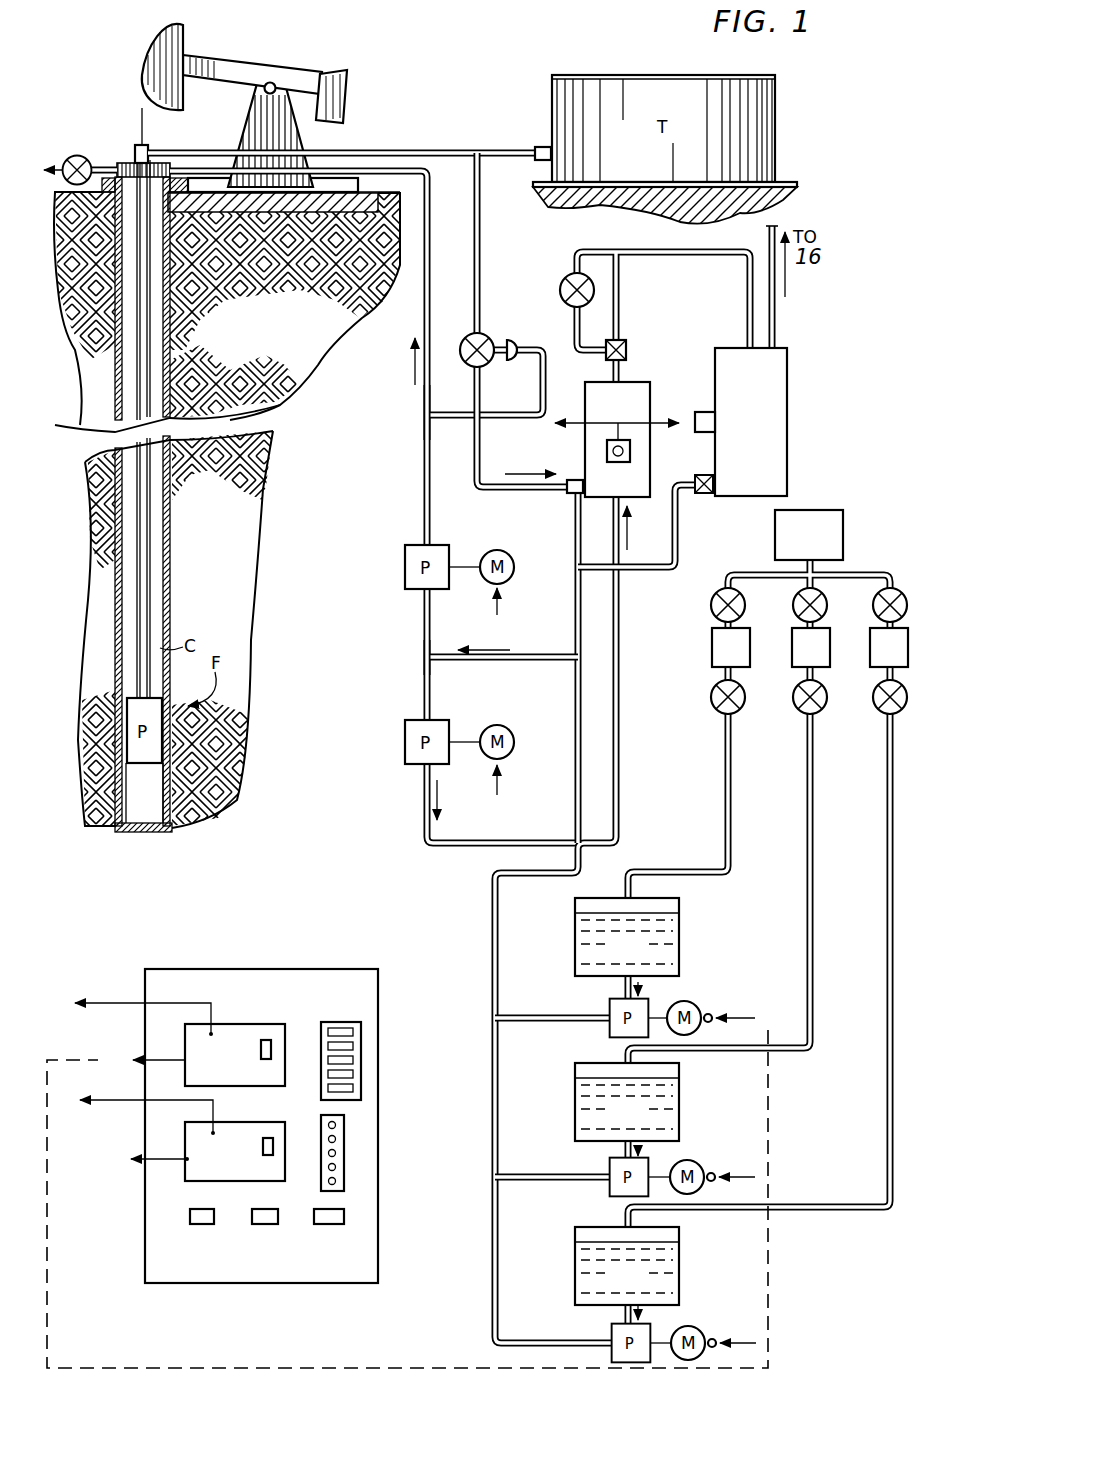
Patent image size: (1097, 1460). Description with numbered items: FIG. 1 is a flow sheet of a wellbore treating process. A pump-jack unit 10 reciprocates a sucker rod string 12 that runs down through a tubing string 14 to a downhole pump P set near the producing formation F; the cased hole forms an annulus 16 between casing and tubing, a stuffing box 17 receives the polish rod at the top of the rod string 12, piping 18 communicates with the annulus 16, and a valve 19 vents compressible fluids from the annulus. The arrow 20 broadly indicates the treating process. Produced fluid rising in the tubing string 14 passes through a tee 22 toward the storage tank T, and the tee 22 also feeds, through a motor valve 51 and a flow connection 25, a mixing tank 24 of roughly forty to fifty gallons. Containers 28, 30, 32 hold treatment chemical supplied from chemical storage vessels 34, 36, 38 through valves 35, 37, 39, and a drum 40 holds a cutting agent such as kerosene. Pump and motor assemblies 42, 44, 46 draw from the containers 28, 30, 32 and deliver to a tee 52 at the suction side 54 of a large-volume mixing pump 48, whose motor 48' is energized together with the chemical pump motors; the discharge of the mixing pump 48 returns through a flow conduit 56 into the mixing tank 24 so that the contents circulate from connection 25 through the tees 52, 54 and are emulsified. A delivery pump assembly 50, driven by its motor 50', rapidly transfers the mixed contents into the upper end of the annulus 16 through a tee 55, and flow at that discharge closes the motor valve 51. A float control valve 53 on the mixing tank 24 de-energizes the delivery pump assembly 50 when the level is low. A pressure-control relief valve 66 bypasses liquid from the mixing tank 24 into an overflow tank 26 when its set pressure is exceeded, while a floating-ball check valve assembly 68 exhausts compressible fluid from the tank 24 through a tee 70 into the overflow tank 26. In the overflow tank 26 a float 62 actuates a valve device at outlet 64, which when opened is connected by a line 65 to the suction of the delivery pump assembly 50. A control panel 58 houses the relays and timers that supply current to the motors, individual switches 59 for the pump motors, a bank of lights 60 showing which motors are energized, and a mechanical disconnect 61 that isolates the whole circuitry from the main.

The pump-jack unit 10 is at (266, 52).
The sucker rod string 12 is at (140, 106).
The tubing string 14 is at (170, 236).
The annulus 16 is at (150, 262).
The stuffing box 17 is at (149, 150).
The piping 18 is at (422, 320).
The valve 19 is at (79, 153).
The process arrow 20 is at (403, 407).
The tee 22 is at (482, 126).
The mixing tank 24 is at (630, 408).
The flow connection 25 is at (574, 478).
The overflow tank 26 is at (760, 422).
The treatment chemical container 28 is at (640, 952).
The treatment chemical container 30 is at (640, 1117).
The treatment chemical container 32 is at (640, 1281).
The chemical storage vessel 34 is at (742, 660).
The valve 35 is at (711, 697).
The chemical storage vessel 36 is at (822, 660).
The valve 37 is at (805, 710).
The chemical storage vessel 38 is at (900, 660).
The valve 39 is at (885, 709).
The drum 40 is at (821, 545).
The pump and motor assembly 42 is at (666, 998).
The pump and motor assembly 44 is at (664, 1165).
The pump and motor assembly 46 is at (668, 1320).
The mixing pump 48 is at (390, 726).
The pump motor 48' is at (483, 751).
The delivery pump assembly 50 is at (391, 556).
The pump motor 50' is at (486, 568).
The motor valve 51 is at (480, 333).
The tee 52 is at (572, 656).
The float control valve 53 is at (612, 463).
The suction side tee 54 is at (424, 659).
The tee 55 is at (427, 416).
The flow conduit 56 is at (619, 604).
The control panel 58 is at (140, 1204).
The individual switches 59 is at (362, 1048).
The bank of lights 60 is at (345, 1140).
The mechanical disconnect 61 is at (358, 1226).
The float 62 is at (705, 411).
The outlet valve 64 is at (705, 474).
The line 65 is at (574, 566).
The pressure control bypass relief valve 66 is at (561, 293).
The check valve assembly 68 is at (628, 350).
The tee 70 is at (612, 247).